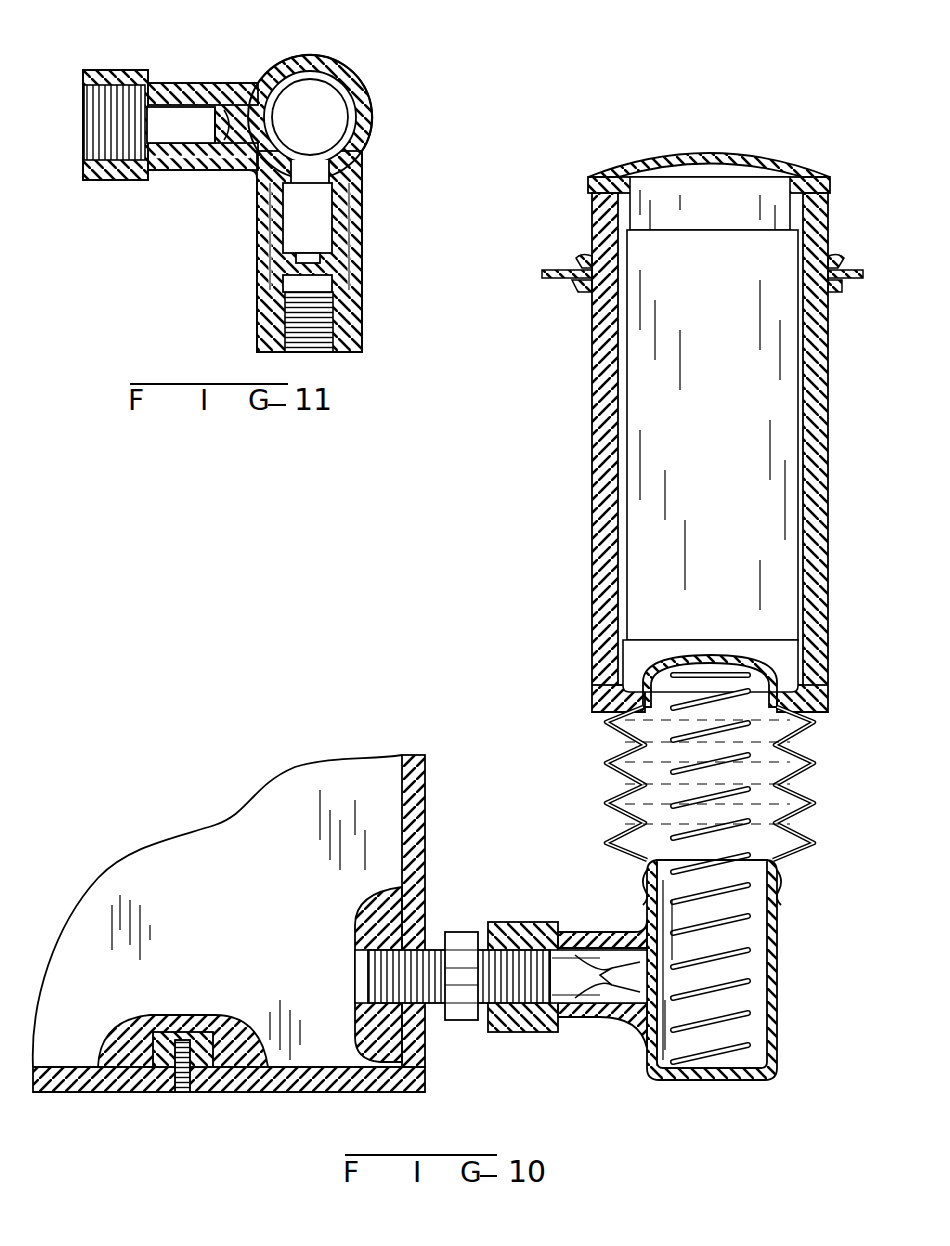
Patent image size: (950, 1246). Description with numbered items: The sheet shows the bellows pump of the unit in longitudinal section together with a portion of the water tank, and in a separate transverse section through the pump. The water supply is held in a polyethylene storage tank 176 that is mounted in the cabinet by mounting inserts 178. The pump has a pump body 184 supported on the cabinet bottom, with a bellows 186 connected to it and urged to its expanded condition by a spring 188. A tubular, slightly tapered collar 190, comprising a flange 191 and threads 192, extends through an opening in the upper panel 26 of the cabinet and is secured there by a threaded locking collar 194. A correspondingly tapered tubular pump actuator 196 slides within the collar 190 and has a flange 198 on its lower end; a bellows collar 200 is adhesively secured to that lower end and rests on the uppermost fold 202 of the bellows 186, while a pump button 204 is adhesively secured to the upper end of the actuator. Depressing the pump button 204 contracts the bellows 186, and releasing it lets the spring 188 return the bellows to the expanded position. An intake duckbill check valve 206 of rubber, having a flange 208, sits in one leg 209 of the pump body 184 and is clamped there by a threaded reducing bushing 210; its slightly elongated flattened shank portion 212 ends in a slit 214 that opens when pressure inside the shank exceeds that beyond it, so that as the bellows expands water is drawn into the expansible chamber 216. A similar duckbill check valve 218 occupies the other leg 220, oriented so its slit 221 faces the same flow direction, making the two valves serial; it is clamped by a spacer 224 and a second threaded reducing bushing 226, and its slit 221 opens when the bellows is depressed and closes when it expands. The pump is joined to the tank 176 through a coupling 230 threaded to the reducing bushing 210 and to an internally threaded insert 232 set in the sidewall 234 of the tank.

In FIG. 10, the upper panel 26 is at (549, 270).
In FIG. 10, the storage tank 176 is at (357, 1085).
In FIG. 10, the mounting inserts 178 is at (195, 1080).
In FIG. 11, the pump body 184 is at (350, 95).
In FIG. 10, the pump body 184 is at (776, 976).
In FIG. 10, the bellows 186 is at (610, 772).
In FIG. 11, the spring 188 is at (352, 136).
In FIG. 10, the spring 188 is at (795, 797).
In FIG. 10, the collar 190 is at (600, 444).
In FIG. 10, the flange 191 is at (578, 290).
In FIG. 10, the threads 192 is at (584, 262).
In FIG. 10, the threaded locking collar 194 is at (836, 262).
In FIG. 10, the pump actuator 196 is at (600, 544).
In FIG. 10, the flange 198 is at (598, 696).
In FIG. 10, the bellows collar 200 is at (820, 712).
In FIG. 10, the uppermost fold 202 is at (606, 735).
In FIG. 10, the pump button 204 is at (633, 175).
In FIG. 11, the intake duckbill check valve 206 is at (192, 102).
In FIG. 10, the intake duckbill check valve 206 is at (592, 1018).
In FIG. 11, the flange 208 is at (172, 82).
In FIG. 11, the leg 209 is at (243, 84).
In FIG. 10, the leg 209 is at (600, 936).
In FIG. 11, the threaded reducing bushing 210 is at (97, 76).
In FIG. 10, the threaded reducing bushing 210 is at (503, 926).
In FIG. 11, the shank portion 212 is at (218, 92).
In FIG. 11, the slit 214 is at (232, 165).
In FIG. 10, the slit 214 is at (627, 1018).
In FIG. 11, the expansible chamber 216 is at (312, 100).
In FIG. 10, the expansible chamber 216 is at (750, 904).
In FIG. 11, the duckbill check valve 218 is at (350, 220).
In FIG. 11, the leg 220 is at (360, 238).
In FIG. 11, the slit 221 is at (335, 258).
In FIG. 11, the spacer 224 is at (275, 230).
In FIG. 11, the threaded reducing bushing 226 is at (352, 338).
In FIG. 10, the coupling 230 is at (432, 957).
In FIG. 10, the internally threaded insert 232 is at (385, 938).
In FIG. 10, the sidewall 234 is at (420, 792).